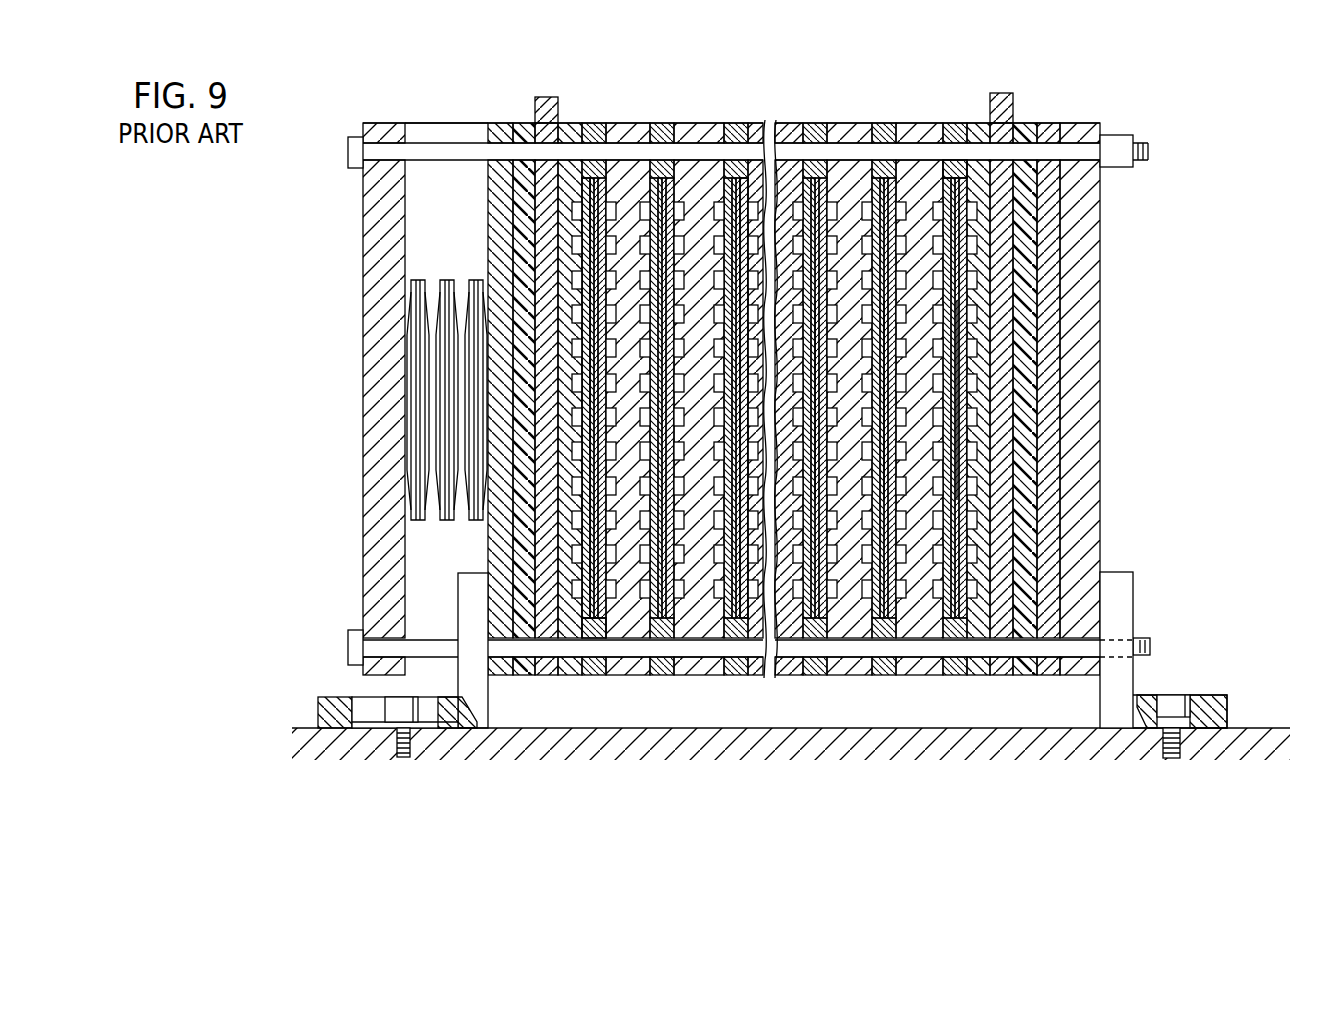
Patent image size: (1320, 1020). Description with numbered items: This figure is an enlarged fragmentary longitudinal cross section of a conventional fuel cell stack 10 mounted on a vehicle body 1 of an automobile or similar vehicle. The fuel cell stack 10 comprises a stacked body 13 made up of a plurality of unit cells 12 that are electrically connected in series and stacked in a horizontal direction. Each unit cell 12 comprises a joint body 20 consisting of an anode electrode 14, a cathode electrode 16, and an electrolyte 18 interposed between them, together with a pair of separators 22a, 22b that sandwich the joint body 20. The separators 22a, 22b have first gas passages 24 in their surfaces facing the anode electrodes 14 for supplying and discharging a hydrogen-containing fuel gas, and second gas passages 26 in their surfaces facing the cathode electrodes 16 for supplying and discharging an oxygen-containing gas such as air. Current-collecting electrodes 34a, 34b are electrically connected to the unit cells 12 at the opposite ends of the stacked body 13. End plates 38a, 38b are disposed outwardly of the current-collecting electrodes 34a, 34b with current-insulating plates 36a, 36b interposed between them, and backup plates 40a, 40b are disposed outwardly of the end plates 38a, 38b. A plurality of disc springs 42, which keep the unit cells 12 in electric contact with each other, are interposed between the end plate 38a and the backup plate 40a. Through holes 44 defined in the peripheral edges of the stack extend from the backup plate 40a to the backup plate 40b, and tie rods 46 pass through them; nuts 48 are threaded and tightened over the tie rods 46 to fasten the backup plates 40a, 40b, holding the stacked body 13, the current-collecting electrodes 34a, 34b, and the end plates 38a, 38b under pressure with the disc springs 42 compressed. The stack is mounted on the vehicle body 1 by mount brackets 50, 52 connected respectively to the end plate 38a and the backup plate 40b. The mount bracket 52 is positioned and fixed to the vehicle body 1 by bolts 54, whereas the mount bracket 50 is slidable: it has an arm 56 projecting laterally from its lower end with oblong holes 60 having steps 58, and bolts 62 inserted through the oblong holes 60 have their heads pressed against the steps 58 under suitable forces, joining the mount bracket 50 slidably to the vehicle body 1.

The vehicle body 1 is at (1252, 739).
The fuel cell stack 10 is at (310, 158).
The unit cell 12 is at (750, 795).
The stacked body 13 is at (737, 116).
The anode electrode 14 is at (975, 478).
The cathode electrode 16 is at (985, 405).
The electrolyte 18 is at (978, 440).
The joint body 20 is at (1175, 422).
The separator 22a is at (622, 665).
The separator 22b is at (713, 665).
The first gas passage 24 is at (636, 203).
The second gas passage 26 is at (962, 358).
The current-collecting electrode 34a is at (538, 108).
The current-collecting electrode 34b is at (1012, 100).
The current-insulating plate 36a is at (517, 213).
The current-insulating plate 36b is at (1023, 279).
The end plate 38a is at (490, 253).
The end plate 38b is at (1050, 226).
The backup plate 40a is at (386, 436).
The backup plate 40b is at (1100, 186).
The disc spring 42 is at (412, 360).
The through hole 44 is at (840, 650).
The tie rod 46 is at (430, 146).
The nut 48 is at (1124, 137).
The mount bracket 50 is at (480, 713).
The mount bracket 52 is at (1130, 585).
The bolt 54 is at (1168, 705).
The arm 56 is at (313, 713).
The step 58 is at (352, 705).
The oblong hole 60 is at (352, 713).
The bolt 62 is at (395, 752).